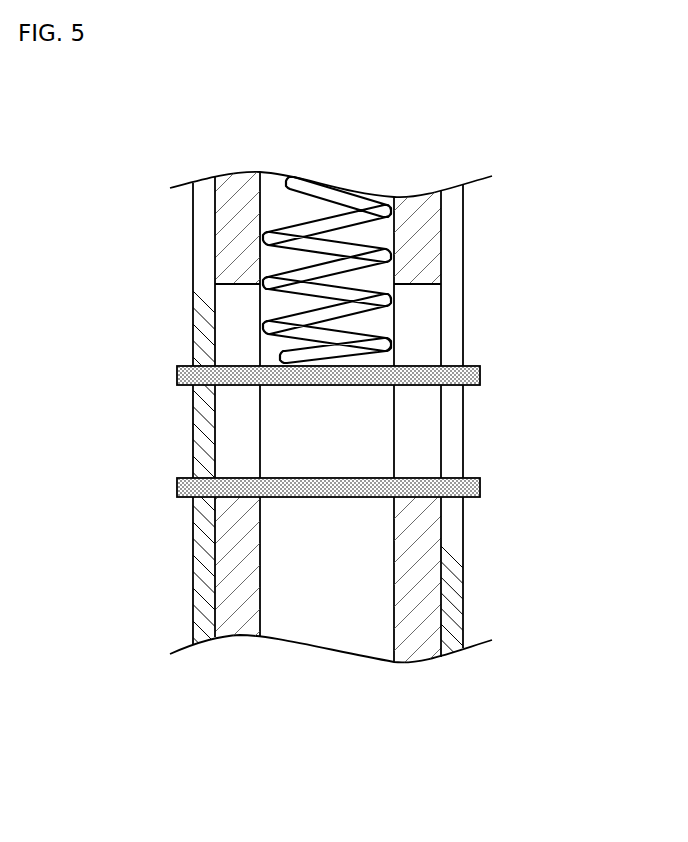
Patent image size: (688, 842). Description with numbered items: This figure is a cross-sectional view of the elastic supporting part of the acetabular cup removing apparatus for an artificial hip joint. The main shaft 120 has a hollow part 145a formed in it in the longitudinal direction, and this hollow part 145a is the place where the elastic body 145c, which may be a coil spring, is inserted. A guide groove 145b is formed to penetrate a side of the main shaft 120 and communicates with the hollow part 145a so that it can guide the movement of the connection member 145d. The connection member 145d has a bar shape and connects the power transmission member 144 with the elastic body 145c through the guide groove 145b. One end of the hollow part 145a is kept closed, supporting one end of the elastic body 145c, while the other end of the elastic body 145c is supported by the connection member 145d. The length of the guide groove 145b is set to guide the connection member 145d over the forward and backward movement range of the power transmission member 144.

The main shaft 120 is at (243, 621).
The power transmission member 144 is at (202, 575).
The hollow part 145a is at (390, 244).
The guide groove 145b is at (235, 418).
The elastic body 145c is at (336, 204).
The connection member 145d is at (176, 378).